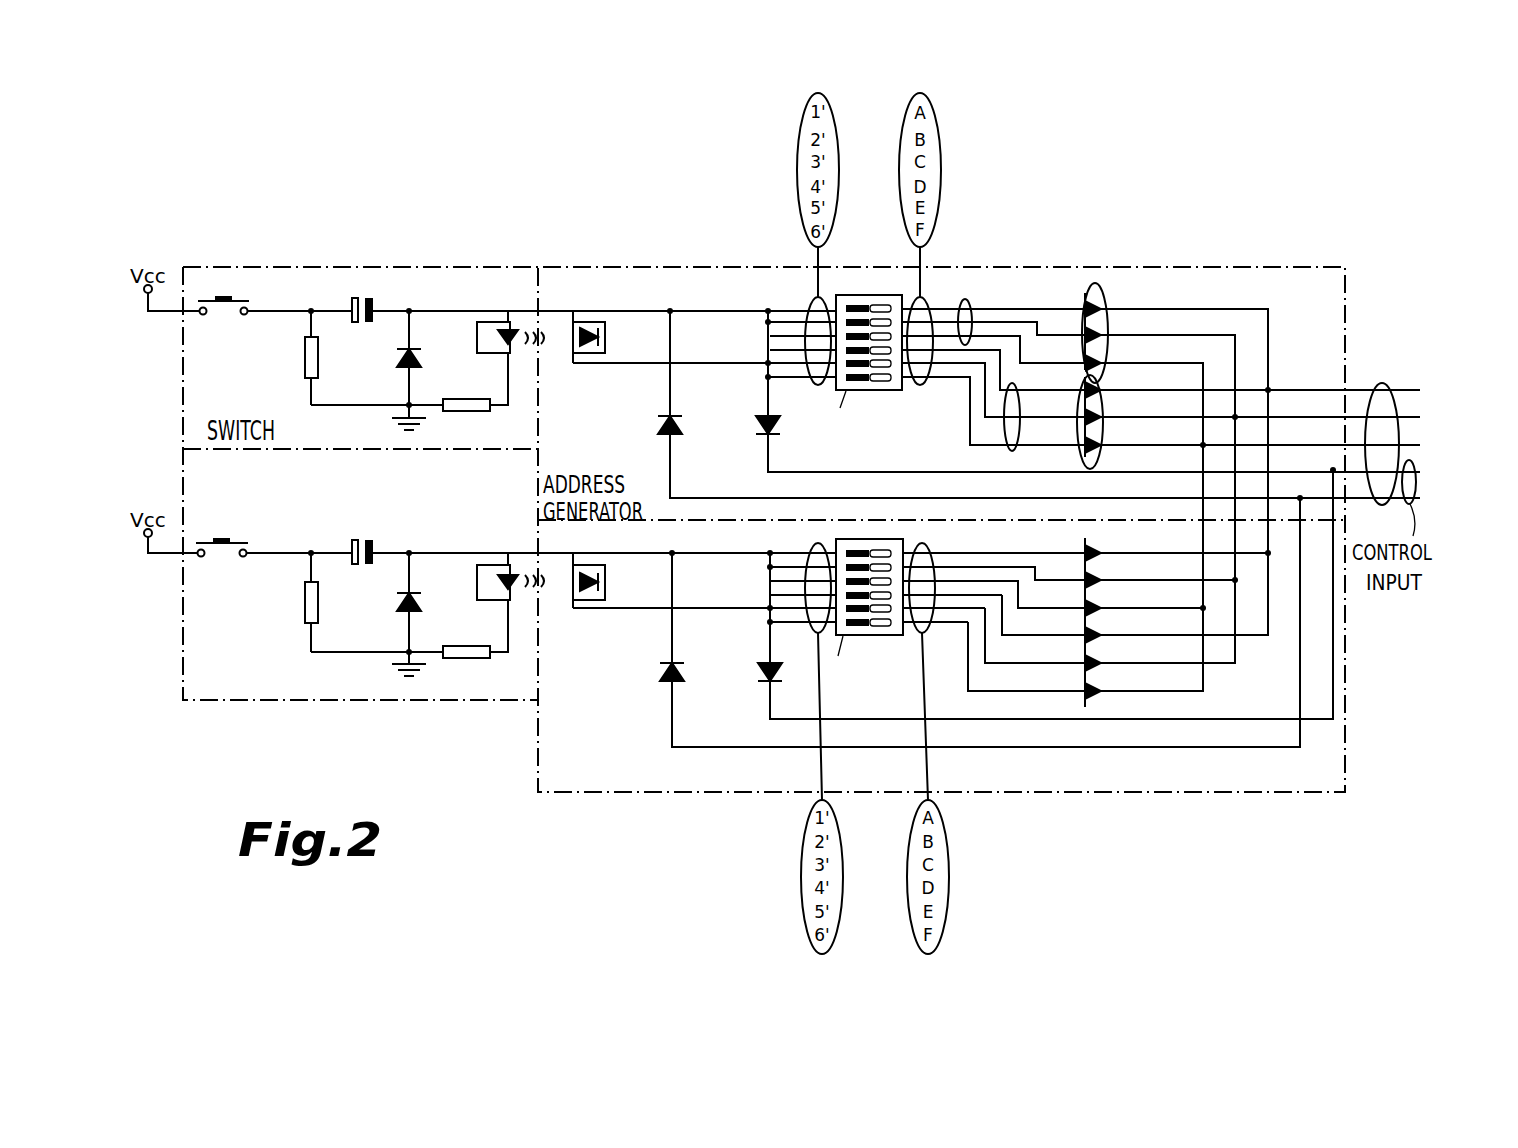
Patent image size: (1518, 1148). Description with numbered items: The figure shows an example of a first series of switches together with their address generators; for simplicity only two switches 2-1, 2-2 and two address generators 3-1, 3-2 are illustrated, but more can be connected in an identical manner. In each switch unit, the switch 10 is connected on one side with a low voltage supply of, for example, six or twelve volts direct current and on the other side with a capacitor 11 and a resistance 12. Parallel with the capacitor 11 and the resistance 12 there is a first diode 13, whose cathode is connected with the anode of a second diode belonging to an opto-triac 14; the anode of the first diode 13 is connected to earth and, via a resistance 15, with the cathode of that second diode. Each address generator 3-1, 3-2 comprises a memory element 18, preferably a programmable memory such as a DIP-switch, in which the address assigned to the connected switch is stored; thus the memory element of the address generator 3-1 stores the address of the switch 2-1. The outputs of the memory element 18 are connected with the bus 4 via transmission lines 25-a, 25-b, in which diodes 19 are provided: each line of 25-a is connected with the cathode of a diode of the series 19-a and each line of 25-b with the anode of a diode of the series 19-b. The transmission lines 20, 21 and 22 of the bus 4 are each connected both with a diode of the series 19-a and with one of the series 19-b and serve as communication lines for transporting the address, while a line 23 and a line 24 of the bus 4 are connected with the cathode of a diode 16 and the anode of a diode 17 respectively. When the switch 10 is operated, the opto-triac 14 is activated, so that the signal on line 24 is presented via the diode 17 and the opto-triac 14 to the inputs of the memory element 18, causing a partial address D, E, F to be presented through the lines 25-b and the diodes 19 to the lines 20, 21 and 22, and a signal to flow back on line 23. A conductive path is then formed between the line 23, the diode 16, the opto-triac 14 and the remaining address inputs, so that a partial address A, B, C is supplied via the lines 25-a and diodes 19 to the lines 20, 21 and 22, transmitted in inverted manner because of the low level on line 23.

The switch 2-1 is at (395, 267).
The switch 2-2 is at (398, 700).
The address generator 3-1 is at (985, 267).
The address generator 3-2 is at (1083, 795).
The bus 4 is at (1382, 385).
The switch 10 is at (226, 313).
The capacitor 11 is at (372, 307).
The resistance 12 is at (304, 362).
The first diode 13 is at (414, 352).
The opto-triac 14 is at (656, 443).
The resistance 15 is at (488, 411).
The diode 16 is at (764, 434).
The diode 17 is at (660, 432).
The memory element 18 is at (870, 295).
The diodes 19 is at (1114, 696).
The series of diodes 19-a is at (1098, 290).
The series of diodes 19-b is at (1096, 458).
The transmission line 20 is at (1480, 390).
The transmission line 21 is at (1480, 417).
The transmission line 22 is at (1480, 444).
The line 23 is at (1480, 470).
The line 24 is at (1480, 497).
The transmission lines 25-a is at (968, 300).
The transmission lines 25-b is at (1004, 448).